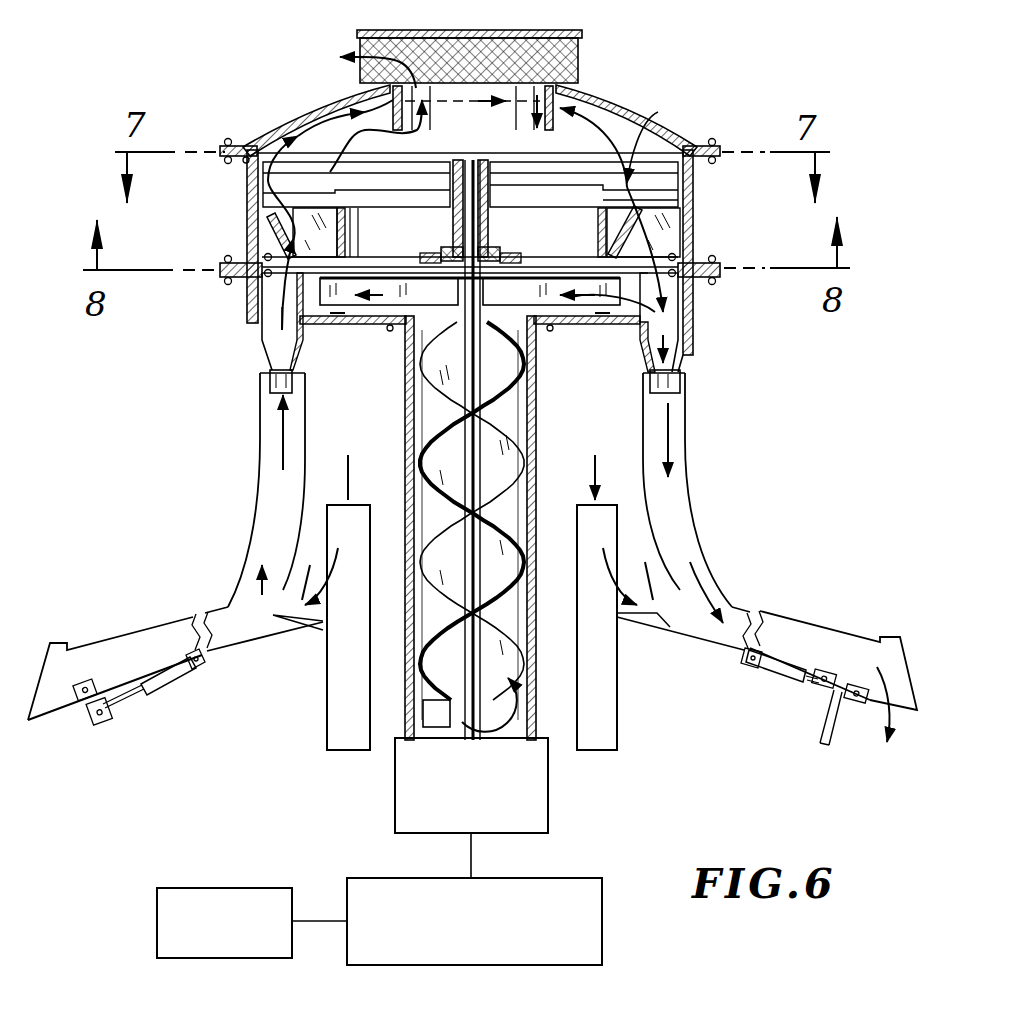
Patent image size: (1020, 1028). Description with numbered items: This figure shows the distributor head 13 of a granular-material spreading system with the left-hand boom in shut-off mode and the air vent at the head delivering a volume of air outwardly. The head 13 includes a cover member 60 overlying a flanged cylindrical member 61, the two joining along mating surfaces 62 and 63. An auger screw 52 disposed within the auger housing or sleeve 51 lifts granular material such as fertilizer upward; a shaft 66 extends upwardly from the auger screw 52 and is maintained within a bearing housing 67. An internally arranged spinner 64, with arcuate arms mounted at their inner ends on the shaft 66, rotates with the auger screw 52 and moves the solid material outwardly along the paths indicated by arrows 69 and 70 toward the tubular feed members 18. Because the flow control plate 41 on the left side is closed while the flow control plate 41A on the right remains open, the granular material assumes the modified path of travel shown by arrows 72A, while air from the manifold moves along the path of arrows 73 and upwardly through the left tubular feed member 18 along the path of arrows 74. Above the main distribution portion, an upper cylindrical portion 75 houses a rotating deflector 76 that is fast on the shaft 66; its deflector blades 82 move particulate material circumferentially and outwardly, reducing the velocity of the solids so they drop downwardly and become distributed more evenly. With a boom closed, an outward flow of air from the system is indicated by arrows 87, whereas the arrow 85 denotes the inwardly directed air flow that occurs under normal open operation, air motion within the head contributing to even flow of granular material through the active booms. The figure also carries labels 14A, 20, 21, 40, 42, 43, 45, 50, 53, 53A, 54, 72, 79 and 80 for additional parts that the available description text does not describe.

The distributor head 13 is at (712, 238).
The bins 14A is at (325, 708).
The tubular feed member 18 is at (260, 465).
The chute assembly 20 is at (472, 655).
The chute 21 is at (172, 620).
The actuator 40 is at (450, 722).
The flow control plate 41 is at (60, 717).
The flow control plate 41A is at (790, 763).
The bracket 42 is at (100, 727).
The rod 43 is at (133, 700).
The cylinder 45 is at (170, 685).
The conveyor from hopper 50 is at (499, 528).
The auger housing 51 is at (535, 423).
The auger screw 52 is at (477, 640).
The motor 53 is at (432, 700).
The variable speed motor 53A is at (407, 878).
The speed control 54 is at (245, 888).
The cover member 60 is at (613, 97).
The flanged cylindrical member 61 is at (247, 187).
The mating surface 62 is at (243, 146).
The mating surface 63 is at (222, 163).
The spinner 64 is at (360, 298).
The shaft 66 is at (488, 182).
The bearing housing 67 is at (498, 247).
The path of arrows 69 is at (415, 322).
The path of arrows 70 is at (573, 300).
The duct 72 is at (662, 335).
The path of arrows 72A is at (562, 92).
The path of arrows 73 is at (282, 307).
The path of arrows 74 is at (283, 432).
The upper cylindrical portion 75 is at (697, 186).
The rotating deflector 76 is at (657, 139).
The outlet 79 is at (267, 367).
The post 80 is at (378, 257).
The deflector blade 82 is at (285, 232).
The arrow 85 is at (583, 53).
The arrow 87 is at (358, 56).